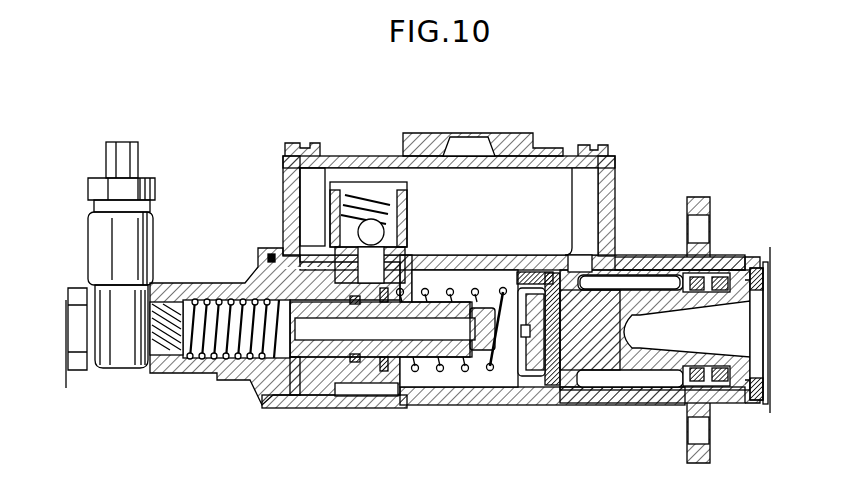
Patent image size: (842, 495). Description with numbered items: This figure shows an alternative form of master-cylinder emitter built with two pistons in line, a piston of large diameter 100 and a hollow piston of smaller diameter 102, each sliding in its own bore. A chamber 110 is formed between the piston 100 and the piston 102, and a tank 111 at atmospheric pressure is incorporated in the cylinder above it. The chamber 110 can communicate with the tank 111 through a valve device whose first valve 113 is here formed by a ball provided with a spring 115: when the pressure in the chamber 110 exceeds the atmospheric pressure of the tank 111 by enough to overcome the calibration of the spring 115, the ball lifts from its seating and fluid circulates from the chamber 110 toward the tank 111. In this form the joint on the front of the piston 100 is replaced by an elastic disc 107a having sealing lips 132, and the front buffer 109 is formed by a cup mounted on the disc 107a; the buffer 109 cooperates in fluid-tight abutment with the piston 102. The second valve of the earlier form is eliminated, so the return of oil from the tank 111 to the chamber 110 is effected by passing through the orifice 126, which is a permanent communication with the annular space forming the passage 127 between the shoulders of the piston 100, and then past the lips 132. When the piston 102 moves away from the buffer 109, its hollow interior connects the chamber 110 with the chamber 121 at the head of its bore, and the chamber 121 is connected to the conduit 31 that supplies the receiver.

The conduit 31 is at (133, 160).
The tank 111 is at (543, 190).
The spring 115 is at (390, 214).
The first valve 113 is at (378, 232).
The orifice 126 is at (578, 262).
The annular space 127 is at (636, 283).
The chamber 121 is at (203, 356).
The piston of smaller diameter 102 is at (323, 360).
The chamber 110 is at (440, 385).
The front buffer 109 is at (522, 340).
The sealing lips 132 is at (542, 378).
The elastic disc 107a is at (558, 357).
The piston of large diameter 100 is at (648, 360).